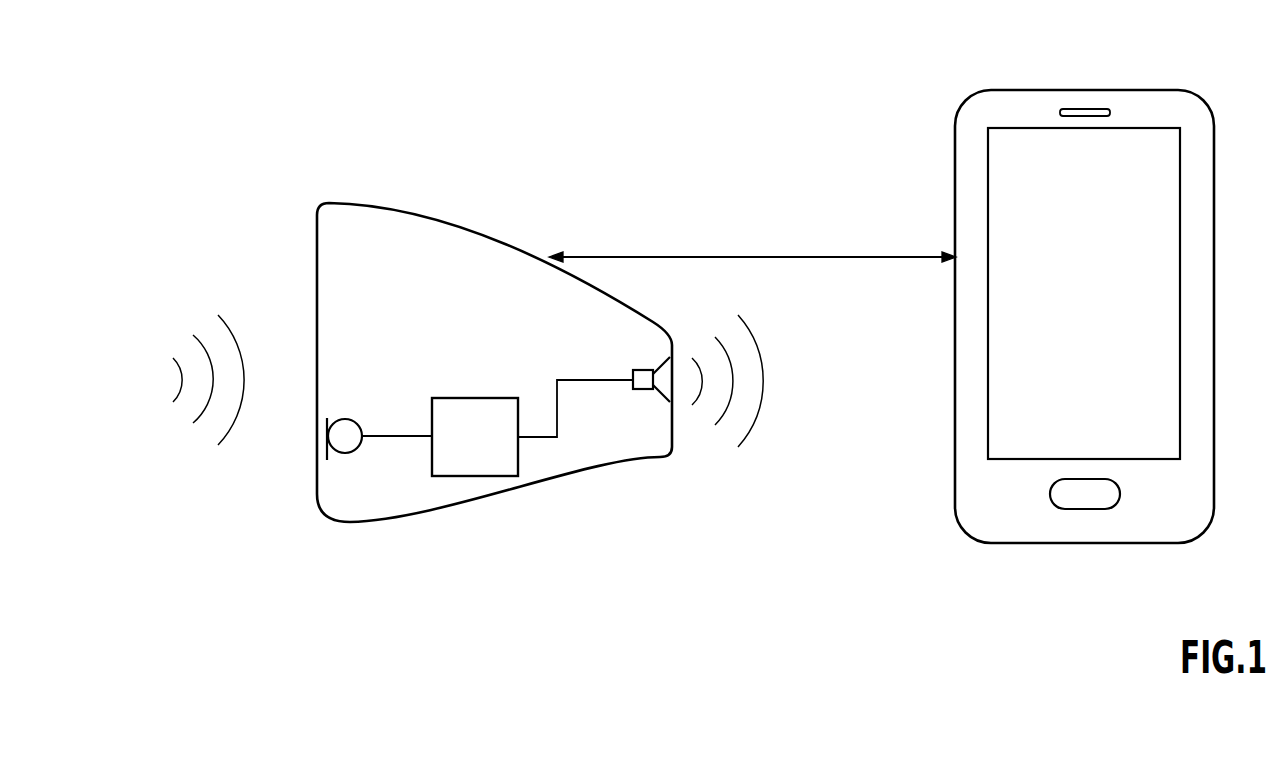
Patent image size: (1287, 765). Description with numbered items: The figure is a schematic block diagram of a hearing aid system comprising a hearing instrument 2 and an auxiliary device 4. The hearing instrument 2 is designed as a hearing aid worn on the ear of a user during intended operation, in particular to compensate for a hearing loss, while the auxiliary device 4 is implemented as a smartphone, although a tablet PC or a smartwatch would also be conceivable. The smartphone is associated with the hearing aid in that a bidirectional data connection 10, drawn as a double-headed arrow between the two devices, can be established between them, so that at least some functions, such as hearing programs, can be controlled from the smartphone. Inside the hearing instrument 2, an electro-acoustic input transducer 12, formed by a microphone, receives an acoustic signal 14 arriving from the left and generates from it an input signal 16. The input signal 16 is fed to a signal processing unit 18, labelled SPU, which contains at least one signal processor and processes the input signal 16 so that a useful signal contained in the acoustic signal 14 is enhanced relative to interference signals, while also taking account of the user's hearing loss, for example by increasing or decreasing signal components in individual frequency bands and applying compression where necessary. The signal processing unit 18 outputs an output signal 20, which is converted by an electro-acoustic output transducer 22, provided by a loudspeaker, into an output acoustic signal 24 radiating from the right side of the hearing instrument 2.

The hearing instrument 2 is at (418, 210).
The auxiliary device 4 is at (1083, 90).
The bidirectional data connection 10 is at (757, 255).
The electro-acoustic input transducer 12 is at (342, 455).
The acoustic signal 14 is at (190, 308).
The input signal 16 is at (387, 438).
The signal processing unit 18 is at (473, 477).
The output signal 20 is at (593, 380).
The electro-acoustic output transducer 22 is at (643, 390).
The output acoustic signal 24 is at (713, 452).